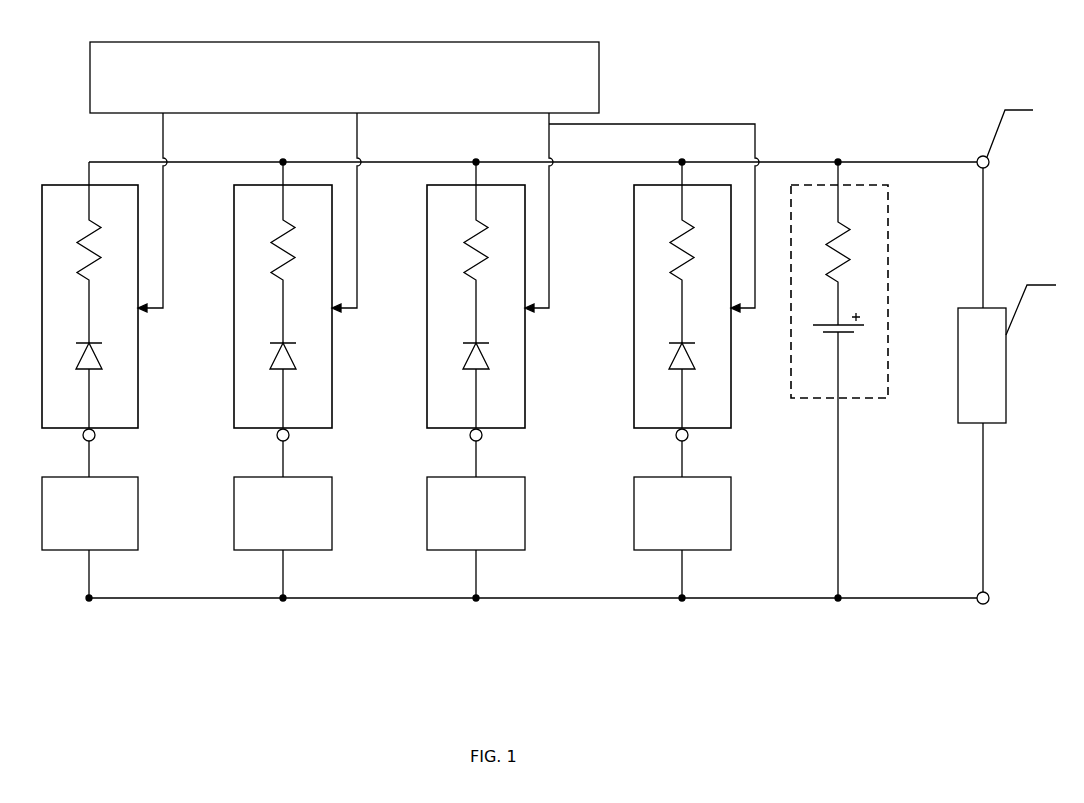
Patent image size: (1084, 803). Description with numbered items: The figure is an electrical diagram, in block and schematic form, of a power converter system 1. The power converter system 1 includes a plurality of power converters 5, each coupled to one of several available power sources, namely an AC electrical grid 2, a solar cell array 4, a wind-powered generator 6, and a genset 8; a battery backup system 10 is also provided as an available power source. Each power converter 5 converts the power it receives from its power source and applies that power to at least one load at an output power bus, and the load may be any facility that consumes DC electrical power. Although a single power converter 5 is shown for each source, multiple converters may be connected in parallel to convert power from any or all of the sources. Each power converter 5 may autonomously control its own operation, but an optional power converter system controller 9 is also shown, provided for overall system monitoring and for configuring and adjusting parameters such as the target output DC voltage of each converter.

The power converter system 1 is at (999, 37).
The AC electrical grid 2 is at (138, 512).
The solar cell array 4 is at (332, 512).
The power converter 5 is at (138, 377).
The wind-powered generator 6 is at (525, 512).
The genset 8 is at (731, 512).
The power converter system controller 9 is at (599, 70).
The battery backup system 10 is at (888, 240).